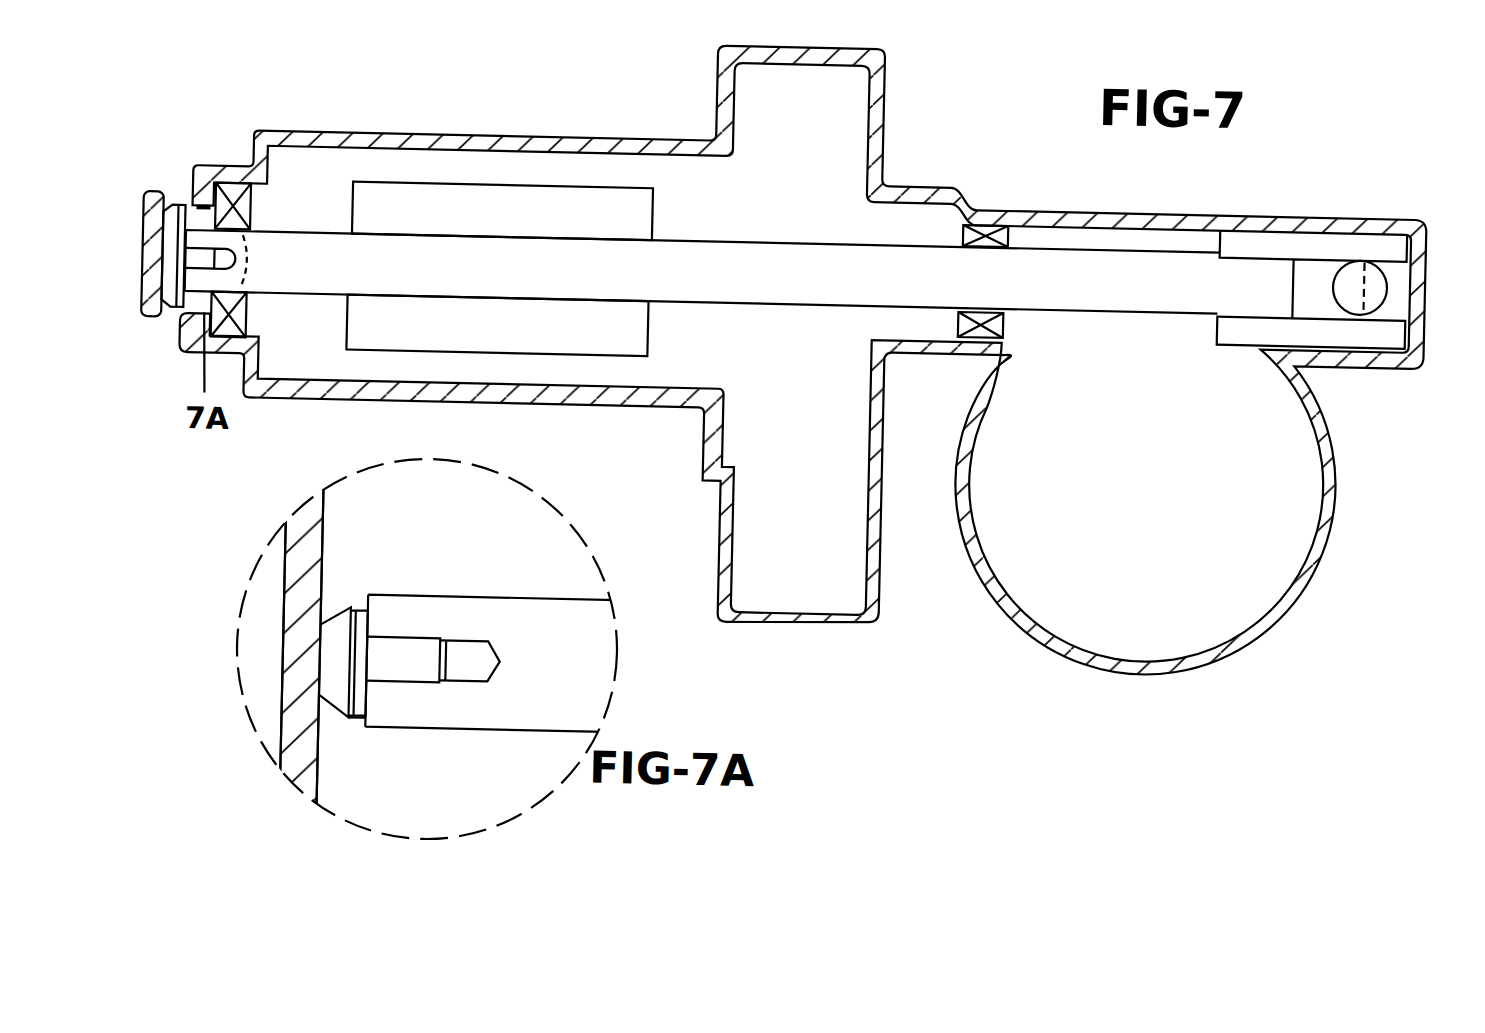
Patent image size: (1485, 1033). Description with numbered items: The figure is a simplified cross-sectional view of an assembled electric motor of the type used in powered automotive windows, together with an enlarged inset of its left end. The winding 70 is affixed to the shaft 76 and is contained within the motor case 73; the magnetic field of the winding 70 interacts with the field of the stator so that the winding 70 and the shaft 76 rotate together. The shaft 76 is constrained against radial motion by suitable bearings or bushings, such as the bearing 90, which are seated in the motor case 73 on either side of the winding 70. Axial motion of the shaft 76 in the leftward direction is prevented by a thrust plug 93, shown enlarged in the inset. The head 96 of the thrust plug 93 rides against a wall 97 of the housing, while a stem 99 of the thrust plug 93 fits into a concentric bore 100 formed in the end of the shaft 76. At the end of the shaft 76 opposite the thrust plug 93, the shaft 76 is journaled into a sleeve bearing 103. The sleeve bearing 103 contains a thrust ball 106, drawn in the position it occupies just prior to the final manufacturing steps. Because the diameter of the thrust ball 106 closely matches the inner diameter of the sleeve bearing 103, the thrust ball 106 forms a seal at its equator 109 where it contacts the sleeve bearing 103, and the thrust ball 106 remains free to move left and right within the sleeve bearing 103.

In FIG. 7, the motor case 73 is at (443, 129).
In FIG. 7, the winding 70 is at (652, 207).
In FIG. 7, the shaft 76 is at (784, 280).
In FIG. 7A, the shaft 76 is at (548, 611).
In FIG. 7, the bearing 90 is at (251, 204).
In FIG. 7, the thrust plug 93 is at (179, 208).
In FIG. 7A, the thrust plug 93 is at (359, 730).
In FIG. 7A, the head 96 is at (328, 655).
In FIG. 7A, the wall 97 is at (322, 520).
In FIG. 7A, the stem 99 is at (413, 648).
In FIG. 7A, the concentric bore 100 is at (477, 683).
In FIG. 7, the sleeve bearing 103 is at (1222, 307).
In FIG. 7, the thrust ball 106 is at (1424, 266).
In FIG. 7, the equator 109 is at (1330, 228).